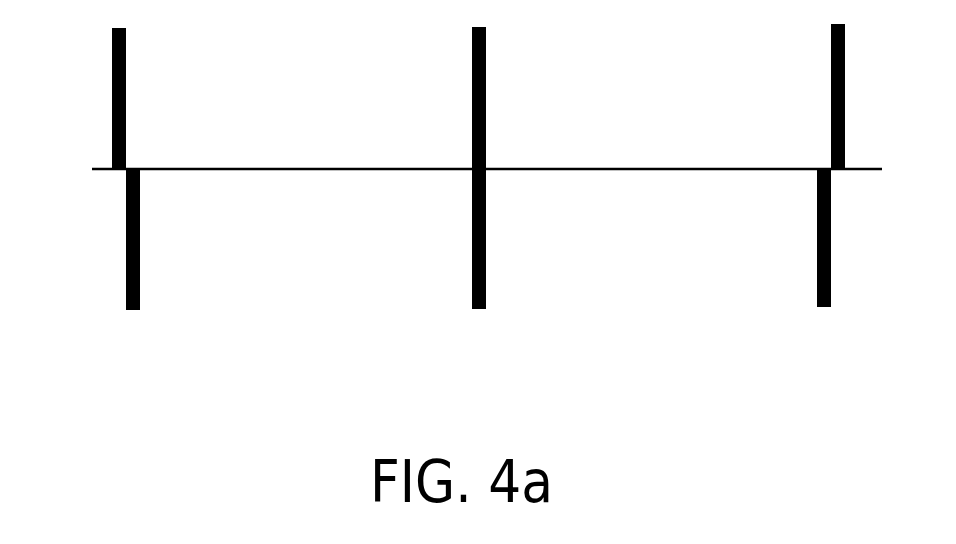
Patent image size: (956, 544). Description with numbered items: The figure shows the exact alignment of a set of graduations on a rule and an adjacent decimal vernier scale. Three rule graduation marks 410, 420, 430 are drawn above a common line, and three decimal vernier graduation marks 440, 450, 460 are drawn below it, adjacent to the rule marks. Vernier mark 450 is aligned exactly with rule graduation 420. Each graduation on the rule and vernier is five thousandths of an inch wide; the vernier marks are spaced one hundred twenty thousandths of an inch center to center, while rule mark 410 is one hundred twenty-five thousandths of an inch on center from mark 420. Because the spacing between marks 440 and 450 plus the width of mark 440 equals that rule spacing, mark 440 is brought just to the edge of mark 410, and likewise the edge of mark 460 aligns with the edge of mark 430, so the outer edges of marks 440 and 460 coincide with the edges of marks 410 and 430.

The rule graduation mark 410 is at (112, 54).
The rule graduation mark 420 is at (472, 41).
The rule graduation mark 430 is at (831, 40).
The decimal vernier graduation mark 440 is at (126, 295).
The decimal vernier graduation mark 450 is at (472, 295).
The decimal vernier graduation mark 460 is at (817, 294).